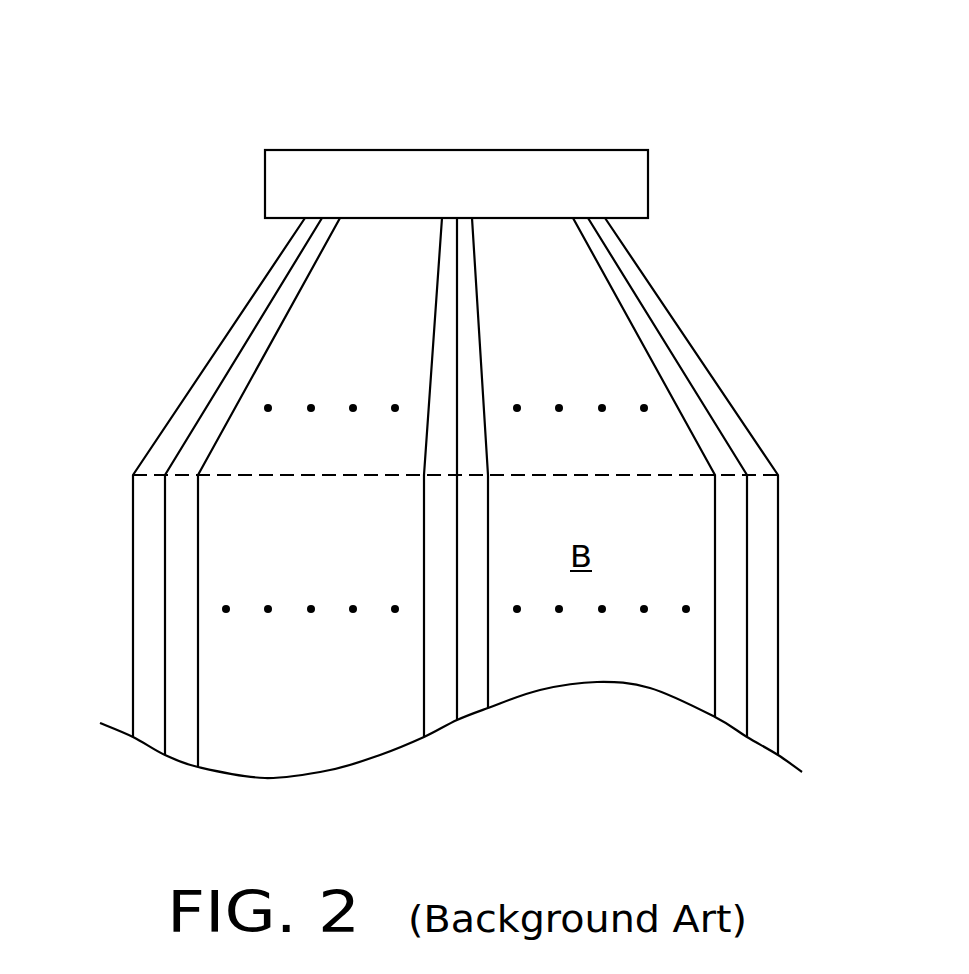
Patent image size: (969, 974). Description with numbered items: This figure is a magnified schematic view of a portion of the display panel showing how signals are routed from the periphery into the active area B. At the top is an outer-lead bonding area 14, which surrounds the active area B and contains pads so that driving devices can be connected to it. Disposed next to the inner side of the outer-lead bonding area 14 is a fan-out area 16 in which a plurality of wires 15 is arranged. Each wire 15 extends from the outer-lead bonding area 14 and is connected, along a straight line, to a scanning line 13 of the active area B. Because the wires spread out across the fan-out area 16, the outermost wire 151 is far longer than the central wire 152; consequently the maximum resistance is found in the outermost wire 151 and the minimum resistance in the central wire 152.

The scanning line 13 is at (133, 650).
The outer-lead bonding area 14 is at (422, 175).
The wire 15 is at (822, 235).
The outermost wire 151 is at (705, 363).
The central wire 152 is at (457, 315).
The fan-out area 16 is at (125, 218).